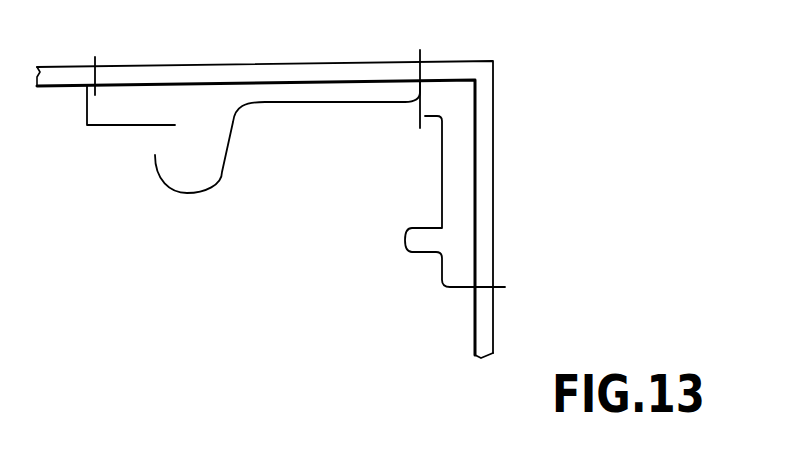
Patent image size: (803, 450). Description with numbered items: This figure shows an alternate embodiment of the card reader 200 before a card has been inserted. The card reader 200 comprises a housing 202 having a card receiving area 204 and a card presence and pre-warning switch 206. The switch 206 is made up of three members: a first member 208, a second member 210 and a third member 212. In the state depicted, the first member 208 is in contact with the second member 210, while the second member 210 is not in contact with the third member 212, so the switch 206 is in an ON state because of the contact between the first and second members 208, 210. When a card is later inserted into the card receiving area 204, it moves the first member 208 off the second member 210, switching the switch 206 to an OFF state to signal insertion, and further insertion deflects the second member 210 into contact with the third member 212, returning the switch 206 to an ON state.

The card reader 200 is at (546, 265).
The housing 202 is at (493, 322).
The card receiving area 204 is at (317, 220).
The card presence and pre-warning switch 206 is at (478, 27).
The first member 208 is at (442, 162).
The second member 210 is at (340, 100).
The third member 212 is at (123, 125).